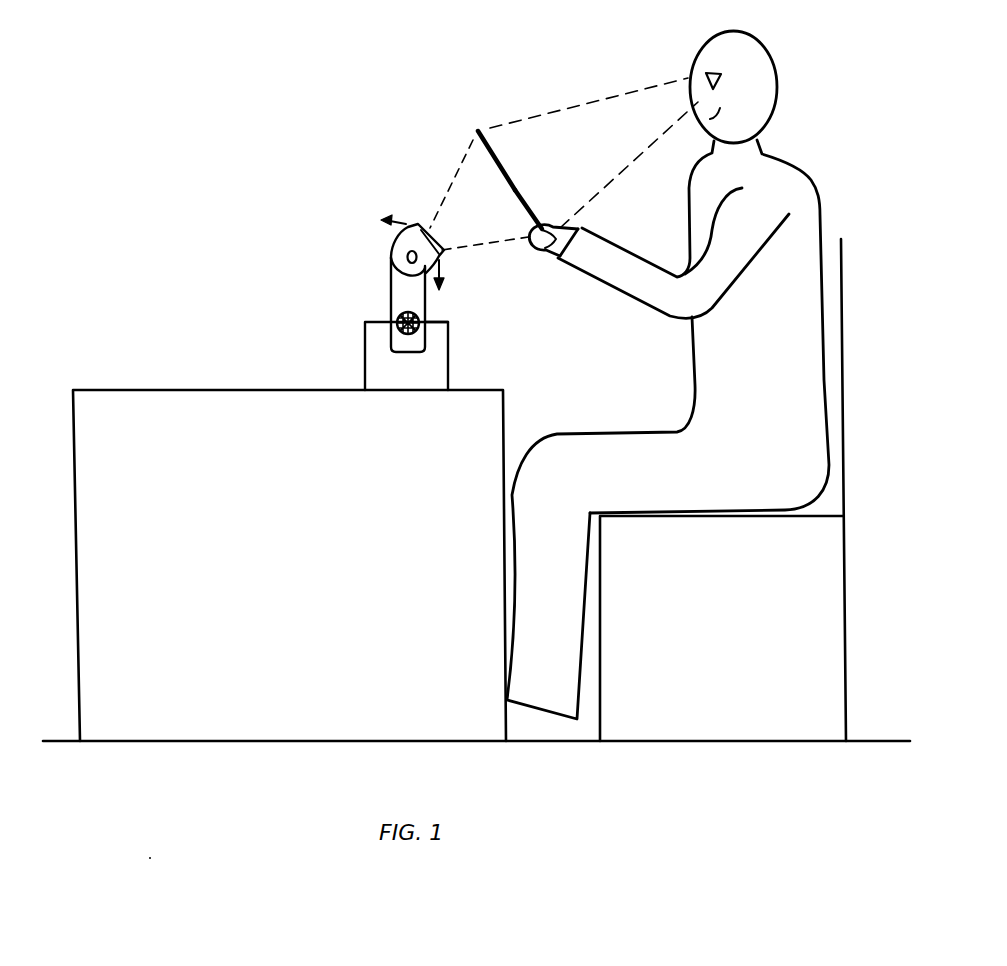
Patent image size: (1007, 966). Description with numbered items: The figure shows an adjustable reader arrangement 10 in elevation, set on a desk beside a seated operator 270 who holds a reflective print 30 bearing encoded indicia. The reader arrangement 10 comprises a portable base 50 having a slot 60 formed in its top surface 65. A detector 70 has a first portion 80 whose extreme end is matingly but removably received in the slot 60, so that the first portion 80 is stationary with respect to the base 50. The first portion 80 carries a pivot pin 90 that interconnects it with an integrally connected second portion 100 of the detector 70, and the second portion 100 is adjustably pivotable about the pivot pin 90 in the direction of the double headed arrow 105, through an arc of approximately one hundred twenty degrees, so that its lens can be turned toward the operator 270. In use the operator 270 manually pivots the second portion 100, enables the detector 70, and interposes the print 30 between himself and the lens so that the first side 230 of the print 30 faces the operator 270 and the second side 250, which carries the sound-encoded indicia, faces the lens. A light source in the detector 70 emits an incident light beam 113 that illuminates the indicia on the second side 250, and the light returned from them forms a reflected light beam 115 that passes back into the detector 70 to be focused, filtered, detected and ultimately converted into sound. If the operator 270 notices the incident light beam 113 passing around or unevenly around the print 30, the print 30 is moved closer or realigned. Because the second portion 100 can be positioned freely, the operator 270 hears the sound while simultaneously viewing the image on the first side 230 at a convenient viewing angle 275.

The reader arrangement 10 is at (338, 331).
The print 30 is at (484, 126).
The base 50 is at (448, 328).
The slot 60 is at (428, 340).
The top surface 65 is at (447, 320).
The detector 70 is at (392, 302).
The first portion 80 is at (391, 285).
The pivot pin 90 is at (392, 258).
The second portion 100 is at (394, 244).
The double headed arrow 105 is at (441, 258).
The incident light beam 113 is at (457, 165).
The reflected light beam 115 is at (441, 200).
The first side 230 is at (520, 204).
The second side 250 is at (520, 205).
The operator 270 is at (790, 172).
The viewing angle 275 is at (598, 100).